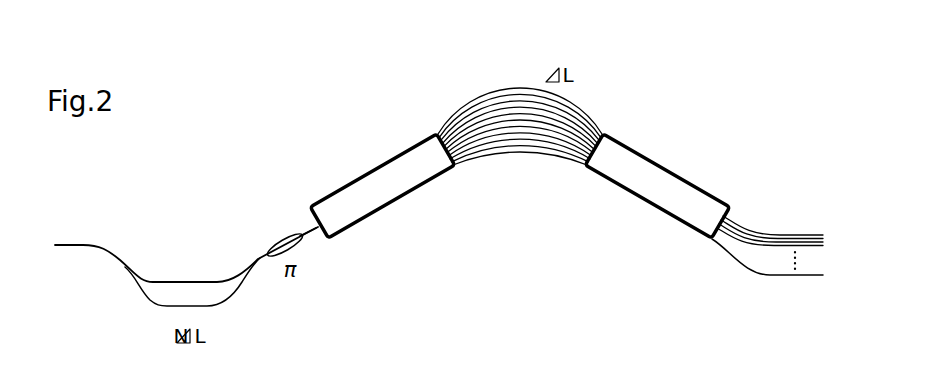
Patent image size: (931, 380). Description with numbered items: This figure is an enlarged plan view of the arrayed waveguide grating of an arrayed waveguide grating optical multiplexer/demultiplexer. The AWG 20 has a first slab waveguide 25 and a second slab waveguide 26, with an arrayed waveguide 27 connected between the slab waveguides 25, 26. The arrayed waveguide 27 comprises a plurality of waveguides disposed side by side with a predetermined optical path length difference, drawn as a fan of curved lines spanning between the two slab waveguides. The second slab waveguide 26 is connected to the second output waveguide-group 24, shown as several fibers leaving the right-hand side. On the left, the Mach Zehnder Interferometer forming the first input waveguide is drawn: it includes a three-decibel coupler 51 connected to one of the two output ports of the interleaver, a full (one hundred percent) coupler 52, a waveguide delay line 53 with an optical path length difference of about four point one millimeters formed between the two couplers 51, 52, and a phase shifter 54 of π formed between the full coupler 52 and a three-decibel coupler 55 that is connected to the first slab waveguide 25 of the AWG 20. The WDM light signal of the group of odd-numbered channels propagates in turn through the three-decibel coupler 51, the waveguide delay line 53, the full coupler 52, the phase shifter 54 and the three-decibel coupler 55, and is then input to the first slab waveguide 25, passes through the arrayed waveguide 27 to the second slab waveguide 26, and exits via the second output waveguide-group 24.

The arrayed waveguide grating 20 is at (520, 85).
The second output waveguide-group 24 is at (803, 279).
The first slab waveguide 25 is at (381, 203).
The second slab waveguide 26 is at (657, 204).
The arrayed waveguide 27 is at (520, 154).
The 3 dB coupler 51 is at (117, 268).
The 100% coupler 52 is at (257, 266).
The waveguide delay line 53 is at (181, 281).
The phase shifter 54 is at (283, 247).
The 3 dB coupler 55 is at (314, 231).